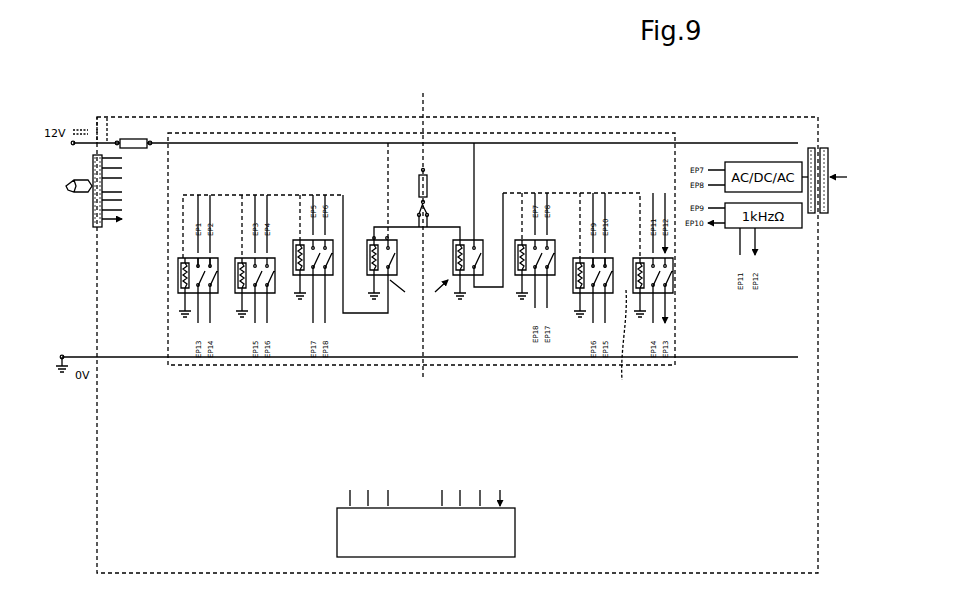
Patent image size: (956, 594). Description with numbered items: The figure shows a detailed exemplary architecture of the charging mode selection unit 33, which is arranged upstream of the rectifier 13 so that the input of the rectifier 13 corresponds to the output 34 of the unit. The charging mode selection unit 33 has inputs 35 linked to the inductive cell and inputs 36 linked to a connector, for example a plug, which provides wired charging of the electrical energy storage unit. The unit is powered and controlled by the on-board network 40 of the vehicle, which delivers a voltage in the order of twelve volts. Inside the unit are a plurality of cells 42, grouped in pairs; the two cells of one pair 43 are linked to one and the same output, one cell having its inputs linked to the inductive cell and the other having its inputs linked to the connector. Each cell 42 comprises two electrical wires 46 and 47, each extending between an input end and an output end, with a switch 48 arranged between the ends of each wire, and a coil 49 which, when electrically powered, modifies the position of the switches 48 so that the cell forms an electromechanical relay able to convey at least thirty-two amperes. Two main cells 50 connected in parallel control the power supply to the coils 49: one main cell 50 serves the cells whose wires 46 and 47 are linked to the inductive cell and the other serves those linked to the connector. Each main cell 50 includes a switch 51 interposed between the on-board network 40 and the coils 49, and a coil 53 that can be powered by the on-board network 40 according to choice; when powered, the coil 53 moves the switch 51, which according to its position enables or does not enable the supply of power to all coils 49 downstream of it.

The rectifier 13 is at (515, 525).
The charging mode selection unit 33 is at (547, 117).
The output 34 is at (328, 468).
The inputs 35 is at (820, 127).
The inputs 36 is at (93, 212).
The on-board network 40 is at (107, 118).
The cell 42 is at (288, 240).
The pair 43 is at (110, 404).
The electrical wire 46 is at (197, 243).
The electrical wire 47 is at (210, 242).
The switch 48 is at (672, 262).
The coil 49 is at (627, 360).
The main cell 50 is at (485, 240).
The switch 51 is at (397, 245).
The coil 53 is at (448, 242).